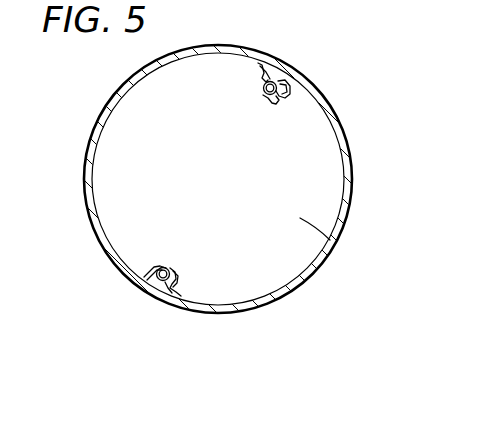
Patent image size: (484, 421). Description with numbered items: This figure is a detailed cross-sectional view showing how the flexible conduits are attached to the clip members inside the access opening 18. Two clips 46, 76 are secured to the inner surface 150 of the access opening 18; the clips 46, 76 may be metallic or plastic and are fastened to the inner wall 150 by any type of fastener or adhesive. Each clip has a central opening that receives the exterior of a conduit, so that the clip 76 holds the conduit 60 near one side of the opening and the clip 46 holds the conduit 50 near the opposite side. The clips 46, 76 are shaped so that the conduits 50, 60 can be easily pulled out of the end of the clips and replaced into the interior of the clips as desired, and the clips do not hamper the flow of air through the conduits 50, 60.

The access opening 18 is at (320, 152).
The inner surface 150 is at (327, 226).
The conduit 60 is at (265, 95).
The clip 76 is at (283, 103).
The conduit 50 is at (170, 267).
The clip 46 is at (176, 288).